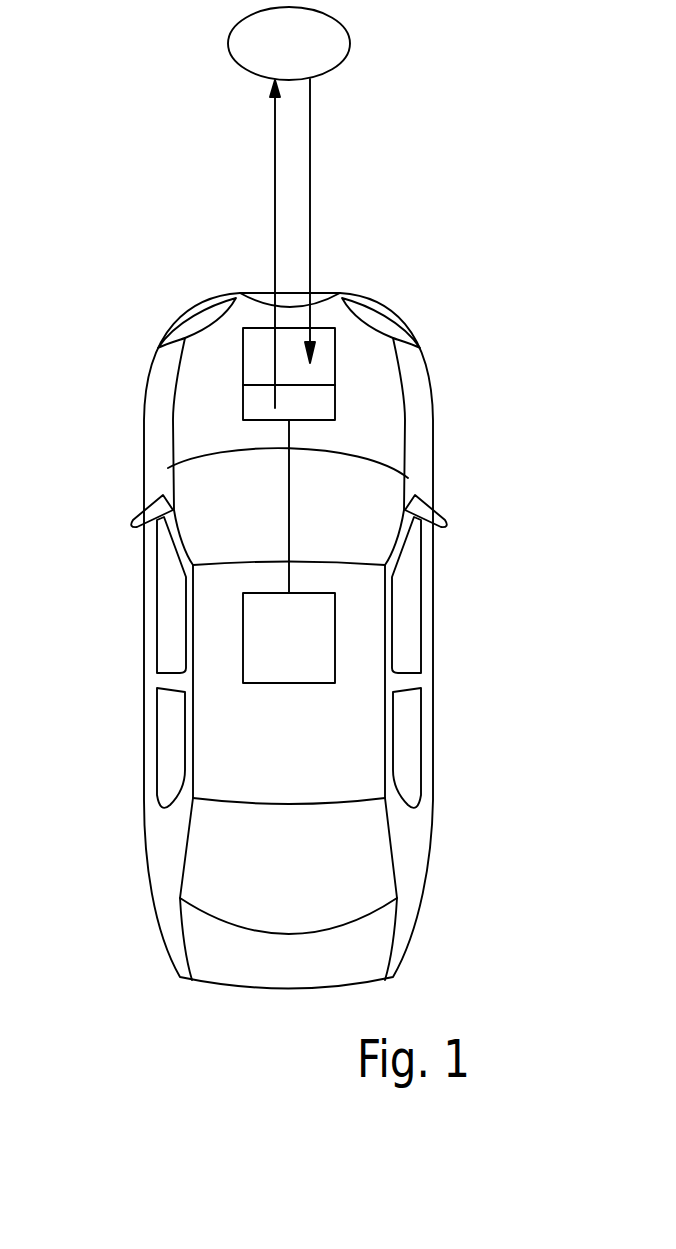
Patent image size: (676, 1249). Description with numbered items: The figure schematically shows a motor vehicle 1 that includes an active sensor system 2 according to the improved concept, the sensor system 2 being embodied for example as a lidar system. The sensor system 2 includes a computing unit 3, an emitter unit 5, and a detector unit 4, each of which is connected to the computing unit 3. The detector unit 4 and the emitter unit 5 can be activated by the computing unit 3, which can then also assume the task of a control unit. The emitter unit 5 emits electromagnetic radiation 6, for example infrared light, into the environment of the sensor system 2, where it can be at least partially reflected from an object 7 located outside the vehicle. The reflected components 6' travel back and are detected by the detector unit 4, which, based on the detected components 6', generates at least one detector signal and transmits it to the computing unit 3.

The motor vehicle 1 is at (313, 627).
The active sensor system 2 is at (221, 482).
The computing unit 3 is at (337, 637).
The detector unit 4 is at (335, 357).
The emitter unit 5 is at (337, 407).
The electromagnetic radiation 6 is at (221, 244).
The reflected components 6' is at (363, 221).
The object 7 is at (282, 55).